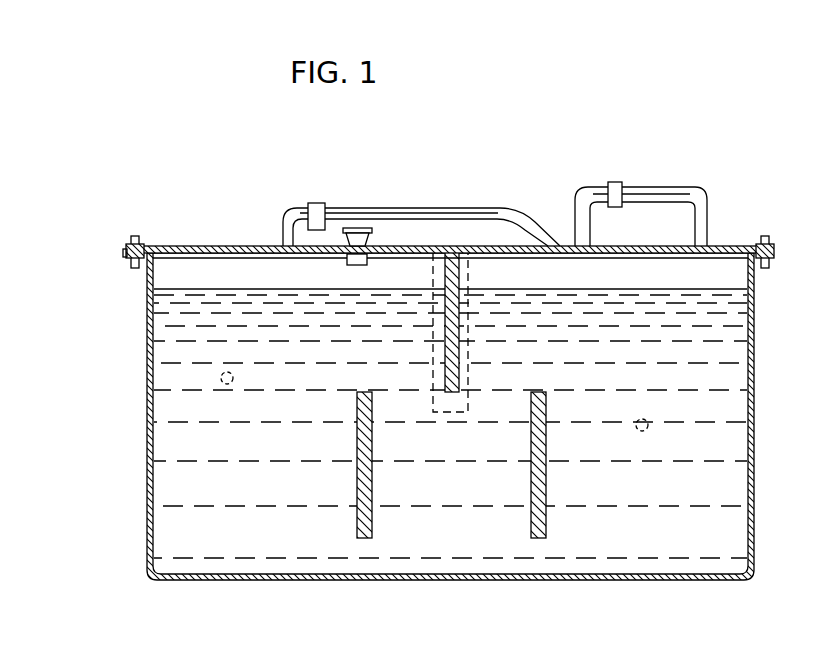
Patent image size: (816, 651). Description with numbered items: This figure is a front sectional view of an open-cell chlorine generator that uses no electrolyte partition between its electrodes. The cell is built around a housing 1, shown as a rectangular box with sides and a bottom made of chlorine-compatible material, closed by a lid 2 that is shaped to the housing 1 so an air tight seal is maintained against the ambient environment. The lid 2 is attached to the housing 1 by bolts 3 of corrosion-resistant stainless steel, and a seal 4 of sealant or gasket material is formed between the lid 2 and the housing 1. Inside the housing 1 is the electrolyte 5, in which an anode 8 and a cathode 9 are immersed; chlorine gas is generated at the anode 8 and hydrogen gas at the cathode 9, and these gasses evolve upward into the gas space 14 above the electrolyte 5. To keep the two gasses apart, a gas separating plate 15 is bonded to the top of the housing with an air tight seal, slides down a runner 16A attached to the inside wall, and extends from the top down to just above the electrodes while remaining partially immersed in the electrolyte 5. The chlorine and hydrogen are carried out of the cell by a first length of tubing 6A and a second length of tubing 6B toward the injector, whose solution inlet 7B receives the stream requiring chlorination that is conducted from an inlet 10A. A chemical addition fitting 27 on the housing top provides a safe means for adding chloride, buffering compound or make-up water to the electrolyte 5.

The housing 1 is at (146, 417).
The lid 2 is at (210, 237).
The bolts 3 is at (131, 238).
The seal 4 is at (123, 251).
The electrolyte 5 is at (190, 475).
The first length of tubing 6A is at (404, 208).
The second length of tubing 6B is at (670, 190).
The solution inlet 7B is at (648, 427).
The anode 8 is at (368, 540).
The cathode 9 is at (545, 540).
The inlet 10A is at (222, 373).
The gas space 14 is at (178, 275).
The gas separating plate 15 is at (455, 250).
The runner 16A is at (468, 278).
The chemical addition fitting 27 is at (356, 228).